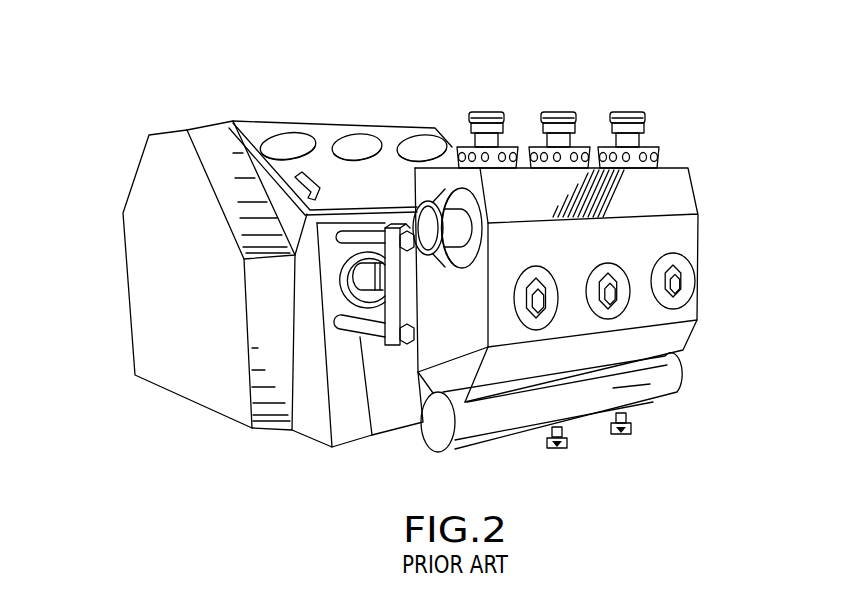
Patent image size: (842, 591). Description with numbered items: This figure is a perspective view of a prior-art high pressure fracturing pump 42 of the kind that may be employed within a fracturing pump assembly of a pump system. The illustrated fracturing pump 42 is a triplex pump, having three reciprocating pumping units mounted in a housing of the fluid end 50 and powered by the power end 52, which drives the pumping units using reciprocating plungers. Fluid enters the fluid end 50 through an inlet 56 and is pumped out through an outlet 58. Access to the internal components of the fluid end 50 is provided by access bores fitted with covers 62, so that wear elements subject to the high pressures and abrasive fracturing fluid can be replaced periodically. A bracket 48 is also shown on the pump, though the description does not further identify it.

The high pressure fracturing pump 42 is at (238, 85).
The mounting bracket 48 is at (407, 301).
The fluid end 50 is at (712, 185).
The power end 52 is at (112, 295).
The inlet 56 is at (435, 418).
The outlet 58 is at (427, 222).
The covers 62 is at (543, 298).